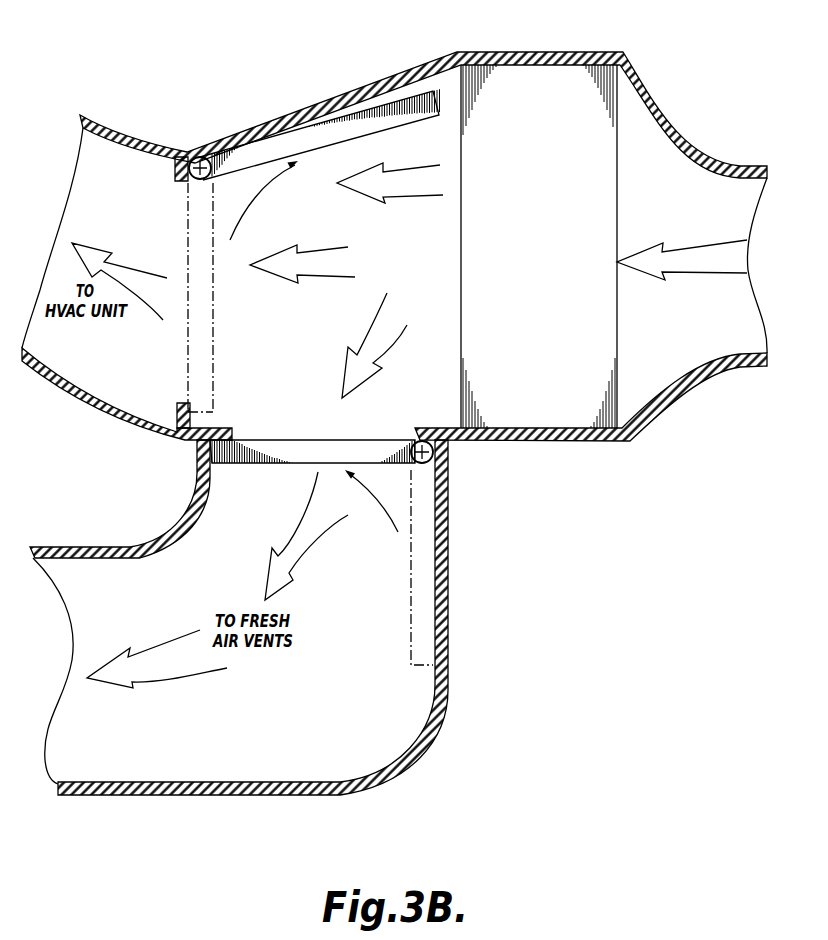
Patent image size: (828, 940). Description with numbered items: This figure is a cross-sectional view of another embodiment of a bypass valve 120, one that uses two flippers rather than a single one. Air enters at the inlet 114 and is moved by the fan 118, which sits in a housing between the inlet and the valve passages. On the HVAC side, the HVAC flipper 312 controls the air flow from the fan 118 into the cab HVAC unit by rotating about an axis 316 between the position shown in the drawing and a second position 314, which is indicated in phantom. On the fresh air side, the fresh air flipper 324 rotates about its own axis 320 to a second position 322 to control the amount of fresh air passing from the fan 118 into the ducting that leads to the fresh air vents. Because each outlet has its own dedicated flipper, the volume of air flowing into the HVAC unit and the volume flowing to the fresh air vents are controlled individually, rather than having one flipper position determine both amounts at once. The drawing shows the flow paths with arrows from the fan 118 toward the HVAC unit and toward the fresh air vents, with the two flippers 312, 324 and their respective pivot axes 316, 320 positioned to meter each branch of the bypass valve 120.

The bypass valve 120 is at (360, 75).
The fan 118 is at (613, 88).
The air inlet 114 is at (727, 190).
The HVAC flipper 312 is at (303, 137).
The position 314 is at (214, 185).
The axis 316 is at (193, 153).
The axis 320 is at (433, 448).
The second position 322 is at (450, 574).
The fresh air flipper 324 is at (253, 464).